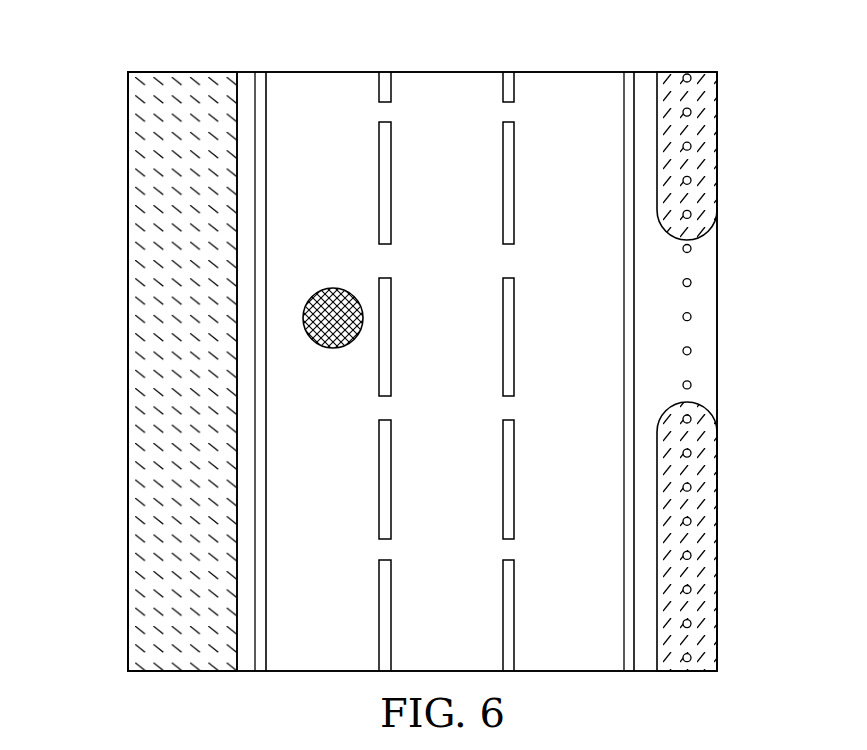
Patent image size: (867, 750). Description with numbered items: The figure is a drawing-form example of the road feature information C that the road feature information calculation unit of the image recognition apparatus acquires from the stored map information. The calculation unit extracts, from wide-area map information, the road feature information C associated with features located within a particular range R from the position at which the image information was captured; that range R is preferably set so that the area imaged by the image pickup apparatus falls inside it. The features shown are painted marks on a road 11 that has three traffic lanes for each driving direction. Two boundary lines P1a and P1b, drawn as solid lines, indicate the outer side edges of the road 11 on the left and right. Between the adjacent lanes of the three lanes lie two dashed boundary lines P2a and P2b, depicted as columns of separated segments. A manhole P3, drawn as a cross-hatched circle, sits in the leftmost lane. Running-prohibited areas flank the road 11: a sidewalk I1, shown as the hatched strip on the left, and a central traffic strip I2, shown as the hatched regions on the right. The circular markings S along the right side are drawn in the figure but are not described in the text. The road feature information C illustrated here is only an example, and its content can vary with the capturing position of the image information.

The road 11 is at (457, 100).
The road feature information C is at (561, 113).
The range R is at (216, 72).
The sidewalk I1 is at (143, 338).
The central traffic strip I2 is at (707, 192).
The boundary line P1a is at (258, 211).
The boundary line P1b is at (624, 307).
The dashed boundary line P2a is at (391, 203).
The dashed boundary line P2b is at (514, 207).
The manhole P3 is at (338, 348).
The solder bumps S is at (691, 81).